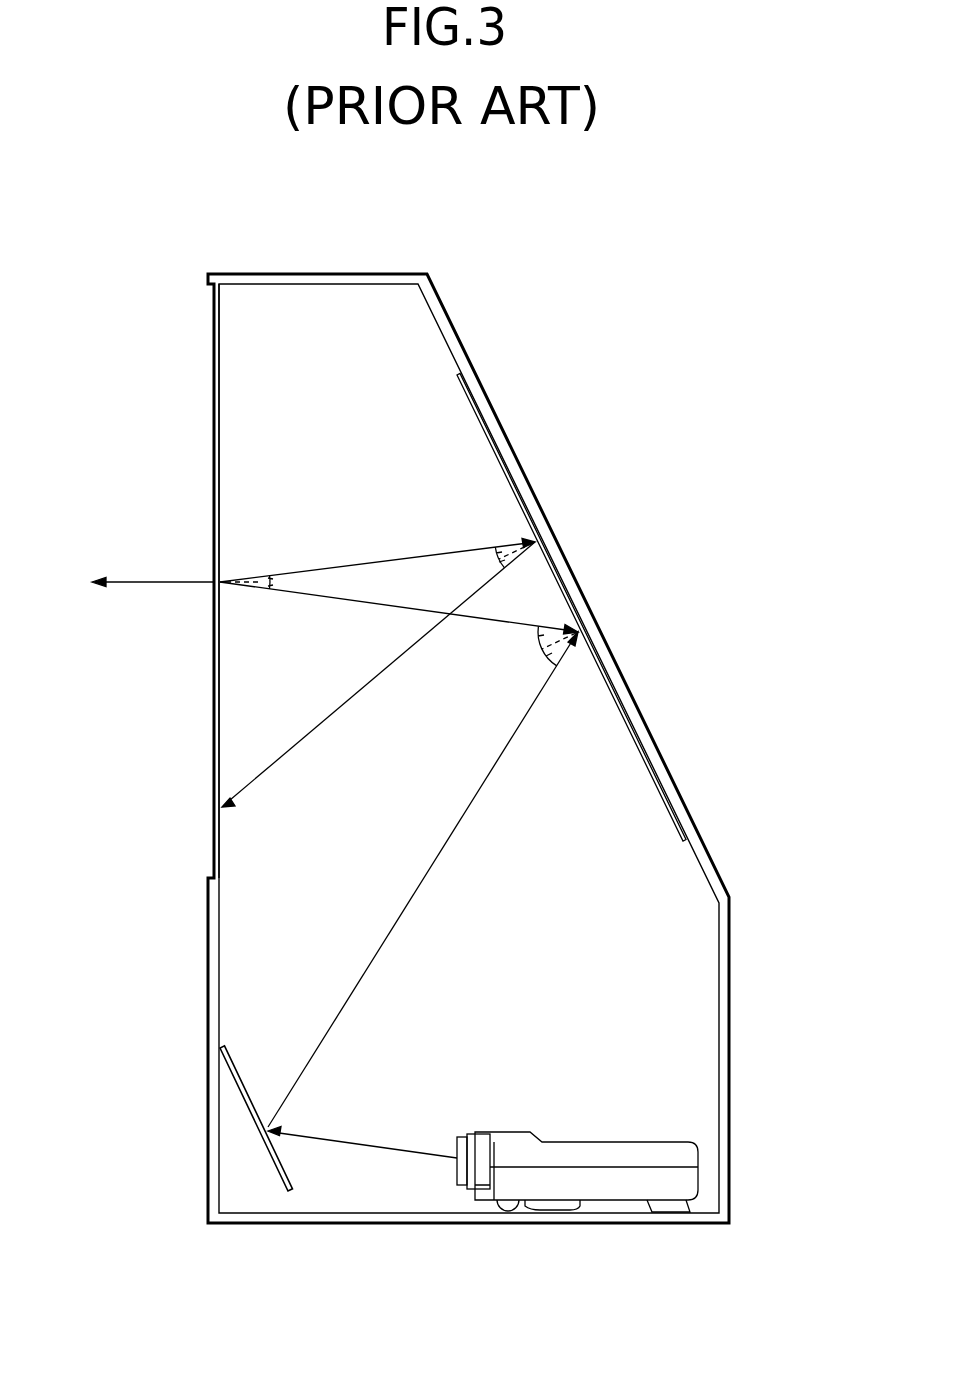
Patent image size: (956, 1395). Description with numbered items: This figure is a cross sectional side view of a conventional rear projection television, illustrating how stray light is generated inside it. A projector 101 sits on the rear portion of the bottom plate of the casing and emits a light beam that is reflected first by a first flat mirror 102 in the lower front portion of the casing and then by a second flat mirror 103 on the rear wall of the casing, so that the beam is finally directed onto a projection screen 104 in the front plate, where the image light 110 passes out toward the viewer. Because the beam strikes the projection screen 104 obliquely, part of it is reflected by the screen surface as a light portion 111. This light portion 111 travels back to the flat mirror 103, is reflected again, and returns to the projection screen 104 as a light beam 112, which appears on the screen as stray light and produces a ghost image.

The projector 101 is at (690, 1182).
The first flat mirror 102 is at (257, 1122).
The second flat mirror 103 is at (635, 741).
The projection screen 104 is at (214, 516).
The outgoing image light 110 is at (156, 584).
The light portion 111 is at (472, 548).
The light beam 112 is at (421, 641).